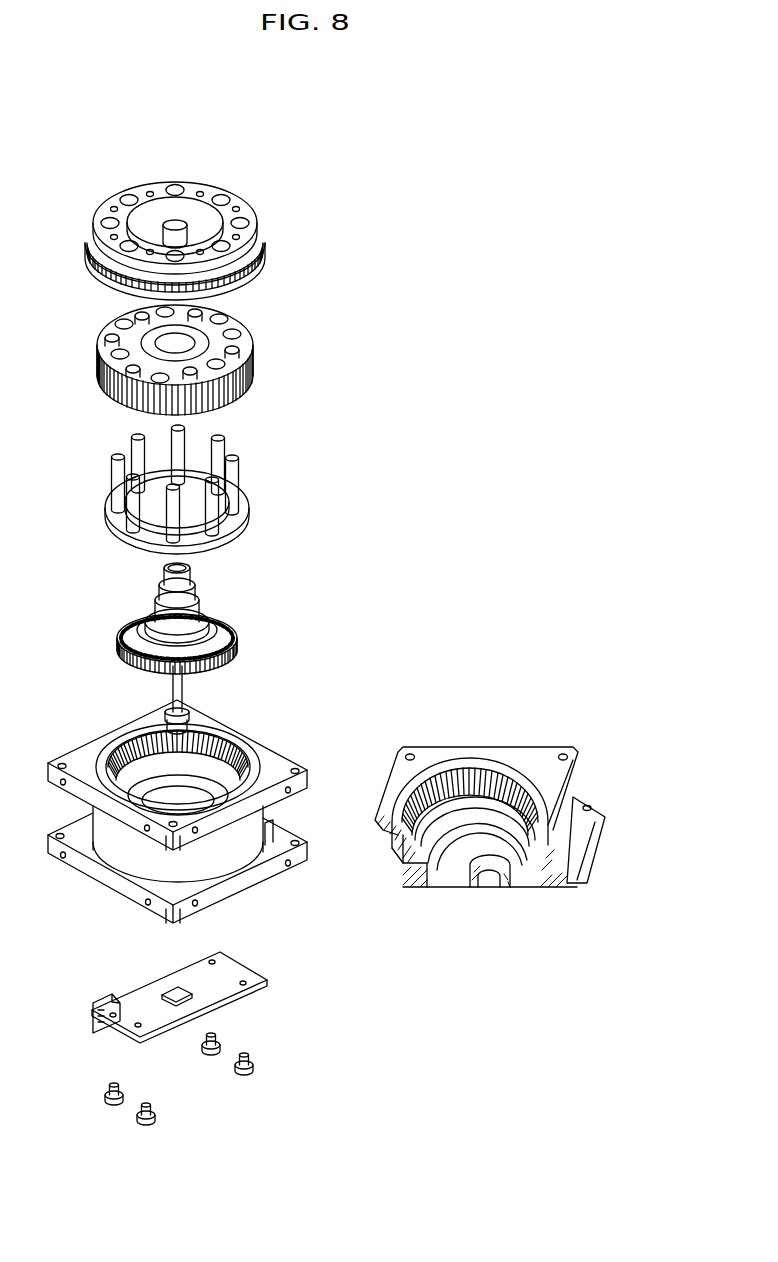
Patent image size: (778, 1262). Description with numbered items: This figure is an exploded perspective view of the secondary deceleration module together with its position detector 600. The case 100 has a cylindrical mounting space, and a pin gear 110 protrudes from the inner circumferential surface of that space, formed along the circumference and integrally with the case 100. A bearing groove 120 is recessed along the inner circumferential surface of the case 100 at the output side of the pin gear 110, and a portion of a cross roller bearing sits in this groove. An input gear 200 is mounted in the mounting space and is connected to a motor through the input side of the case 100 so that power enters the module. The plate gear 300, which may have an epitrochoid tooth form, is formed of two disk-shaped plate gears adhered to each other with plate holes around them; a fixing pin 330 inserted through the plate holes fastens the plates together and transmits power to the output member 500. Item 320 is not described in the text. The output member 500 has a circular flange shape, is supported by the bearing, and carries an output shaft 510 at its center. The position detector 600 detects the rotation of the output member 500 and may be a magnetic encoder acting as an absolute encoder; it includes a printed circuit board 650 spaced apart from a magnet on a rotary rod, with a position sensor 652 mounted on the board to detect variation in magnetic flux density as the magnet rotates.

The case 100 is at (285, 752).
The pin gear 110 is at (510, 770).
The bearing groove 120 is at (396, 842).
The input gear 200 is at (237, 648).
The plate gear 300 is at (258, 362).
The carrier plate 320 is at (237, 489).
The fixing pin 330 is at (240, 473).
The output member 500 is at (216, 196).
The output shaft 510 is at (176, 221).
The position detector 600 is at (170, 693).
The printed circuit board 650 is at (174, 987).
The position sensor 652 is at (217, 985).